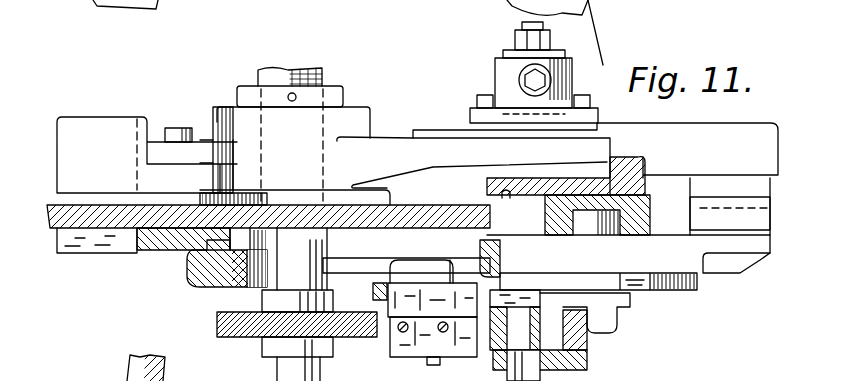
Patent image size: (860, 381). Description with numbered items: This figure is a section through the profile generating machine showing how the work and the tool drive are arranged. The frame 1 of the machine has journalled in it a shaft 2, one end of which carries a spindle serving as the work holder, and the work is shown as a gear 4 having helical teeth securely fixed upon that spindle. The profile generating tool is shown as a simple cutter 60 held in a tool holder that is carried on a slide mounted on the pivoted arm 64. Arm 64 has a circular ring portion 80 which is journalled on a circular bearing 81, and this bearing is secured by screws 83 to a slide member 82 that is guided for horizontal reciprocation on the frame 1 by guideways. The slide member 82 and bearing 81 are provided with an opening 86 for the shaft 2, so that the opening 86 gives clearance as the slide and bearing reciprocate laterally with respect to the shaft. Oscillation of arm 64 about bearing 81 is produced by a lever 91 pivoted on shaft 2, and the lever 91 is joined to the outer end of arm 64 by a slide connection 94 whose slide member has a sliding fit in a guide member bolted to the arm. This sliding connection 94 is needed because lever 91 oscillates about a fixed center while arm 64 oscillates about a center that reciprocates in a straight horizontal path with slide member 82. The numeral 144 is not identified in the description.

The frame 1 is at (165, 379).
The shaft 2 is at (310, 71).
The gear 4 is at (216, 328).
The cutter 60 is at (381, 337).
The pivoted arm 64 is at (737, 268).
The circular ring portion 80 is at (188, 273).
The circular bearing 81 is at (499, 262).
The slide member 82 is at (489, 228).
The screws 83 is at (453, 228).
The opening 86 is at (368, 268).
The lever 91 is at (672, 130).
The slide connection 94 is at (708, 217).
The shaft 144 is at (689, 369).